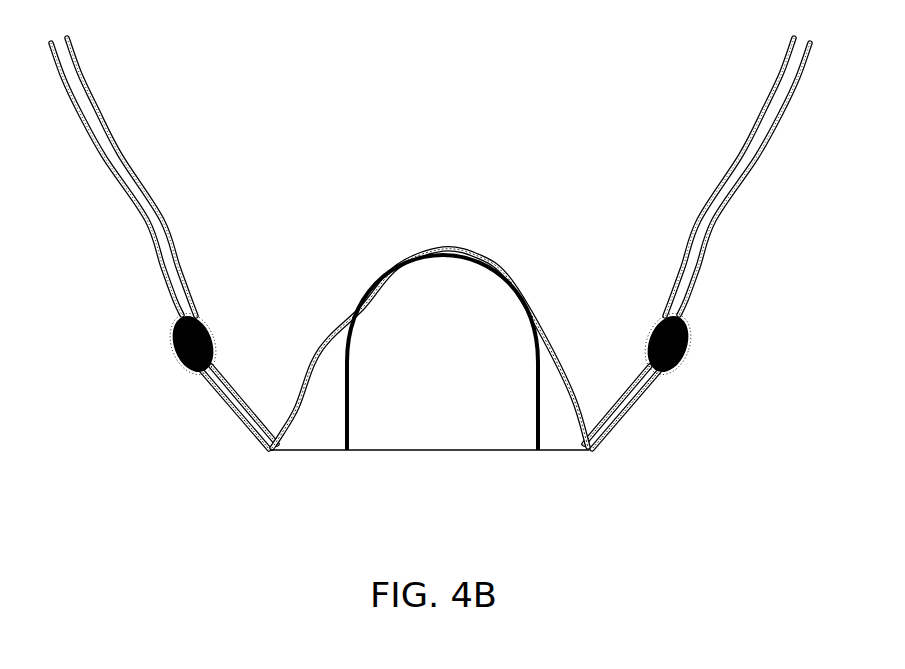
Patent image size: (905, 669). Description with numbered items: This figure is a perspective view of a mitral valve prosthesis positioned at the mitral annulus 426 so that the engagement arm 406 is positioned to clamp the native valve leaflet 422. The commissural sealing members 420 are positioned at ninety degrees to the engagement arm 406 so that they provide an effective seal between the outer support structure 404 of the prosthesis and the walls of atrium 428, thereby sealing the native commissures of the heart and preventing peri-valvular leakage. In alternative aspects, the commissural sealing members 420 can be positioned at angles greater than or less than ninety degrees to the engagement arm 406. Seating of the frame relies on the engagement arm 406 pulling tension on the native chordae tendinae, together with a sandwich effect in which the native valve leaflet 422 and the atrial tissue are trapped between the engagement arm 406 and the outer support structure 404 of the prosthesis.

The outer support structure 404 is at (99, 118).
The walls of atrium 428 is at (112, 172).
The commissural sealing members 420 is at (185, 368).
The native valve leaflet 422 is at (532, 294).
The engagement arm 406 is at (352, 415).
The mitral annulus 426 is at (594, 449).